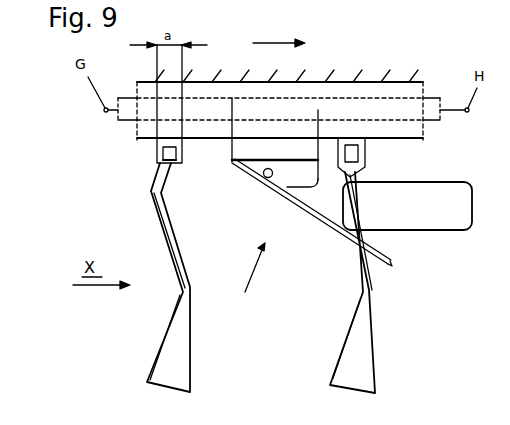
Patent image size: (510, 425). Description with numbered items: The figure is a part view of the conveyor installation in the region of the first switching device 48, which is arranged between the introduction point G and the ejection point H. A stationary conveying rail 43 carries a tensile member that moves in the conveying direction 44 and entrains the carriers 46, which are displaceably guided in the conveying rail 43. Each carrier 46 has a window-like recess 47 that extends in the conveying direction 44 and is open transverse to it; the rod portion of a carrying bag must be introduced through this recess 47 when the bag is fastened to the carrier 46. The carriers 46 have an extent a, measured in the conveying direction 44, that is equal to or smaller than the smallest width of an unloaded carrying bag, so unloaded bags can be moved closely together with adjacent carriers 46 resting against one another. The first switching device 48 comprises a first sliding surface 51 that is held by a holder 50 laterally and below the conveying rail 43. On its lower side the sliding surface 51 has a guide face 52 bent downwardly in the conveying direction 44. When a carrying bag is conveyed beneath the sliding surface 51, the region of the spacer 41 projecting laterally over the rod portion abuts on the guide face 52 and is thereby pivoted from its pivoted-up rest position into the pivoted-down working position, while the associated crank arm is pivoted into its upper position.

The spacer 41 is at (152, 220).
The conveying rail 43 is at (385, 80).
The conveying direction 44 is at (272, 42).
The carrier 46 is at (158, 168).
The window-like recess 47 is at (155, 150).
The first switching device 48 is at (244, 282).
The holder 50 is at (232, 160).
The first sliding surface 51 is at (283, 198).
The guide face 52 is at (427, 233).